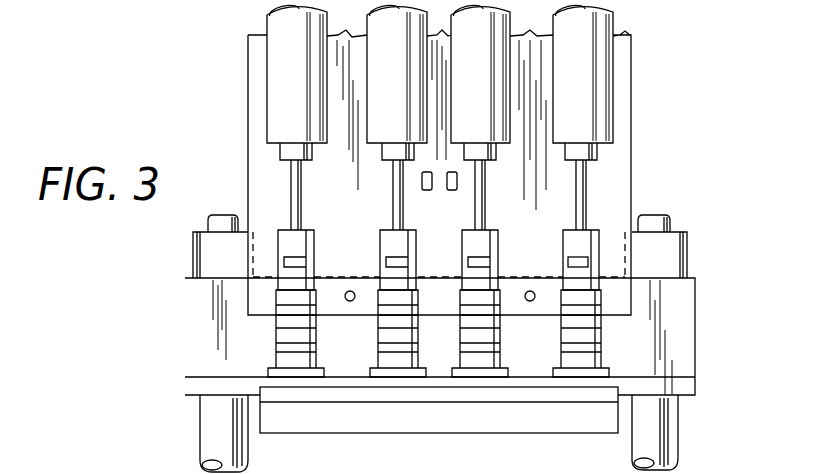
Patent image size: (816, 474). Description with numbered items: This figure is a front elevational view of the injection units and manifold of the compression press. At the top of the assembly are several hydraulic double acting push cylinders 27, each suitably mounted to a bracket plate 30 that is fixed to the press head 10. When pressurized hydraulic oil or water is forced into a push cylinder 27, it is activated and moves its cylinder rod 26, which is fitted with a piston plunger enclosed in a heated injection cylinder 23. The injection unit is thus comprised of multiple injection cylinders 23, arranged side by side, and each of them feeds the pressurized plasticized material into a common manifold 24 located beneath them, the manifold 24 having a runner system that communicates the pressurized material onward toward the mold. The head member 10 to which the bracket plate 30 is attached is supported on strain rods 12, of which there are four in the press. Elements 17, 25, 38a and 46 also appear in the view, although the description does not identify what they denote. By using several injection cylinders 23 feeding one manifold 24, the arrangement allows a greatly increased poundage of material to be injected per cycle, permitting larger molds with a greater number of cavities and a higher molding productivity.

The head member 10 is at (688, 325).
The strain rods 12 is at (210, 428).
The guide posts 17 is at (208, 251).
The heated injection cylinder 23 is at (307, 250).
The manifold 24 is at (575, 420).
The window opening 25 is at (585, 258).
The cylinder rod 26 is at (296, 190).
The hydraulic double acting push cylinder 27 is at (280, 61).
The bracket plate 30 is at (620, 150).
The stop tabs 38a is at (452, 172).
The holes 46 is at (351, 290).